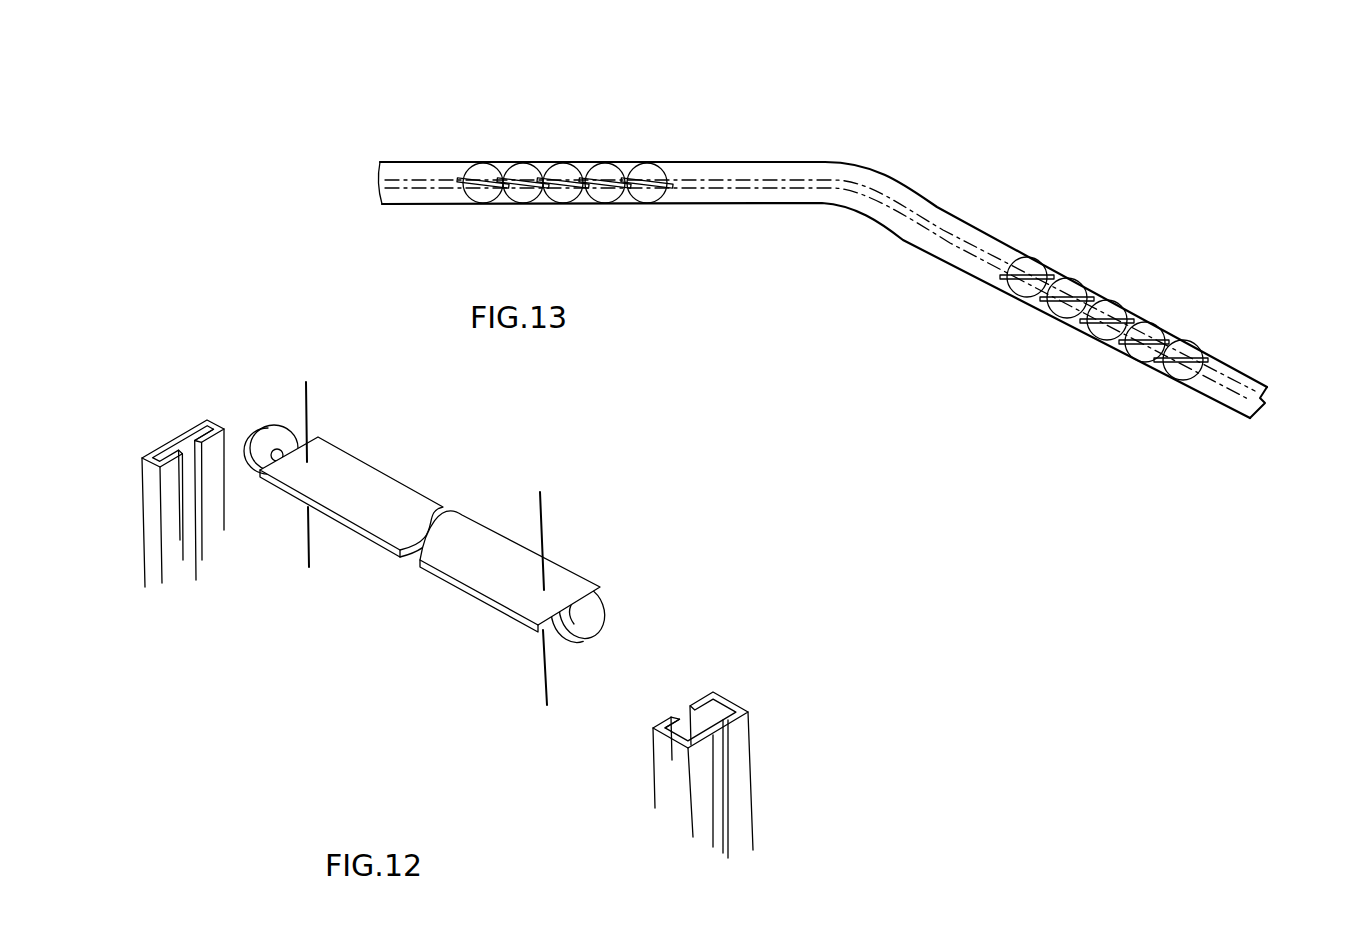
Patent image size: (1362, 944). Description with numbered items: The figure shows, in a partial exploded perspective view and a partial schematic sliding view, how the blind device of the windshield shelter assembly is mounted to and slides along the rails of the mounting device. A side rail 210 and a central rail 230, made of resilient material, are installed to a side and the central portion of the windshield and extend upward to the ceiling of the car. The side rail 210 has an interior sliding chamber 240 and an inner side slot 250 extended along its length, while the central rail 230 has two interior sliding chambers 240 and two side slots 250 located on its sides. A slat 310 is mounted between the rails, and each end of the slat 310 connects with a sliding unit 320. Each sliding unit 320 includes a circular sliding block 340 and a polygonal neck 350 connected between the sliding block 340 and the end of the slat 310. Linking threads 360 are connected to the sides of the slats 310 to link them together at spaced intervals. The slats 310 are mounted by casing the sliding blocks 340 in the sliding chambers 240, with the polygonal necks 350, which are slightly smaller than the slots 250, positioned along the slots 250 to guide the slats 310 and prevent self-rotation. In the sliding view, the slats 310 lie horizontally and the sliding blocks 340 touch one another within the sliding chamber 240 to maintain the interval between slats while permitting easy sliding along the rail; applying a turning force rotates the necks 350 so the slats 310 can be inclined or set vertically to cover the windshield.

In FIG. 12, the side rail 210 is at (227, 450).
In FIG. 12, the central rail 230 is at (737, 742).
In FIG. 13, the interior sliding chamber 240 is at (775, 162).
In FIG. 12, the interior sliding chamber 240 is at (183, 450).
In FIG. 12, the side slot 250 is at (193, 540).
In FIG. 13, the slat 310 is at (1007, 283).
In FIG. 12, the slat 310 is at (385, 502).
In FIG. 12, the sliding unit 320 is at (290, 398).
In FIG. 13, the circular sliding block 340 is at (1030, 267).
In FIG. 12, the circular sliding block 340 is at (300, 432).
In FIG. 12, the polygonal neck 350 is at (277, 425).
In FIG. 12, the linking thread 360 is at (310, 537).